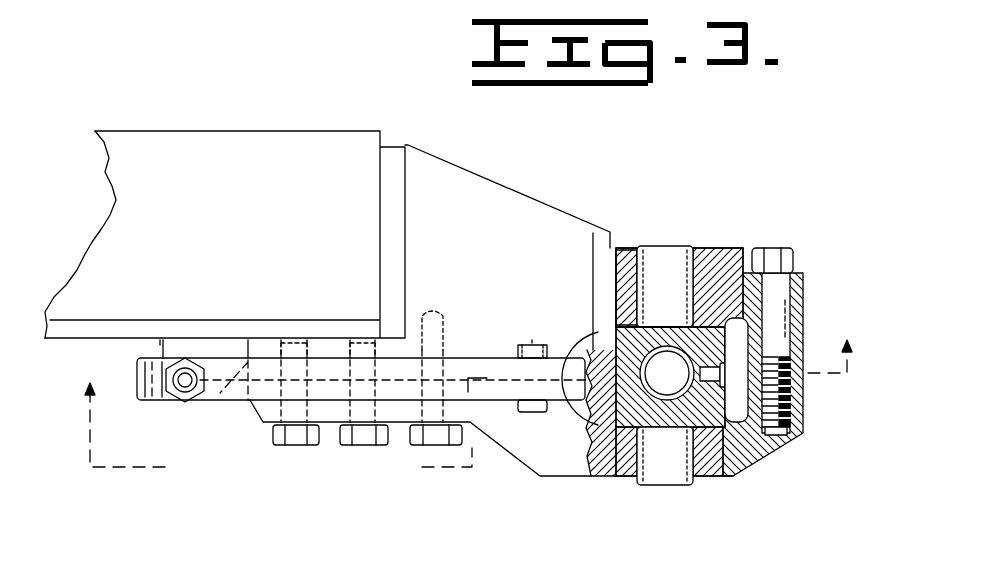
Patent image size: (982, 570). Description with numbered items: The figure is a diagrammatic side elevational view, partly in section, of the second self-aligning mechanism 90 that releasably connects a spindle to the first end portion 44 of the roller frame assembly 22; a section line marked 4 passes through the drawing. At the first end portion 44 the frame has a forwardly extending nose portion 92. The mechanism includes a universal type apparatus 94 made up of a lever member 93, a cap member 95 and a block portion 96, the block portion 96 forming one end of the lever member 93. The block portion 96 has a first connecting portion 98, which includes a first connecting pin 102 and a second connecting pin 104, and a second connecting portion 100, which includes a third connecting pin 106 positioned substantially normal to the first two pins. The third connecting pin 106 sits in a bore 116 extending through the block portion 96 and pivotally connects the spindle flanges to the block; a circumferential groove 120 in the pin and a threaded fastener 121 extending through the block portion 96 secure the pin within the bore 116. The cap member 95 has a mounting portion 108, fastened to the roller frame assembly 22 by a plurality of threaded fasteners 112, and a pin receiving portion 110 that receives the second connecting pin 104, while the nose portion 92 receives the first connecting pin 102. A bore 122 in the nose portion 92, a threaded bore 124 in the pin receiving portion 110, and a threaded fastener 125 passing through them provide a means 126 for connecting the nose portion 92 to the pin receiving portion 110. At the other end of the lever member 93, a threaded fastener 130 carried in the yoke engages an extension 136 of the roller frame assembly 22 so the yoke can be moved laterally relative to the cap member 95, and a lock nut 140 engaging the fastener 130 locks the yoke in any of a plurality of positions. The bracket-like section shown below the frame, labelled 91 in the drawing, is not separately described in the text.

The roller frame assembly 22 is at (263, 148).
The first end portion 44 is at (485, 200).
The second self-aligning mechanism 90 is at (658, 228).
The bracket 91 is at (522, 470).
The forwardly extending nose portion 92 is at (737, 250).
The lever member 93 is at (230, 400).
The universal type apparatus 94 is at (635, 481).
The cap member 95 is at (405, 410).
The block portion 96 is at (712, 410).
The first connecting portion 98 is at (642, 304).
The second connecting portion 100 is at (633, 400).
The first connecting pin 102 is at (651, 280).
The second connecting pin 104 is at (651, 467).
The third connecting pin 106 is at (653, 386).
The mounting portion 108 is at (450, 402).
The pin receiving portion 110 is at (722, 481).
The threaded fasteners 112 is at (295, 446).
The bore 116 is at (618, 346).
The circumferential groove 120 is at (703, 330).
The threaded fastener 121 is at (710, 322).
The bore 122 is at (790, 327).
The threaded bore 124 is at (797, 405).
The threaded fastener 125 is at (796, 430).
The means for connecting 126 is at (818, 302).
The second threaded fastener 130 is at (185, 380).
The extension 136 is at (167, 352).
The second lock nut 140 is at (185, 395).
The section line 4- 4 is at (469, 423).